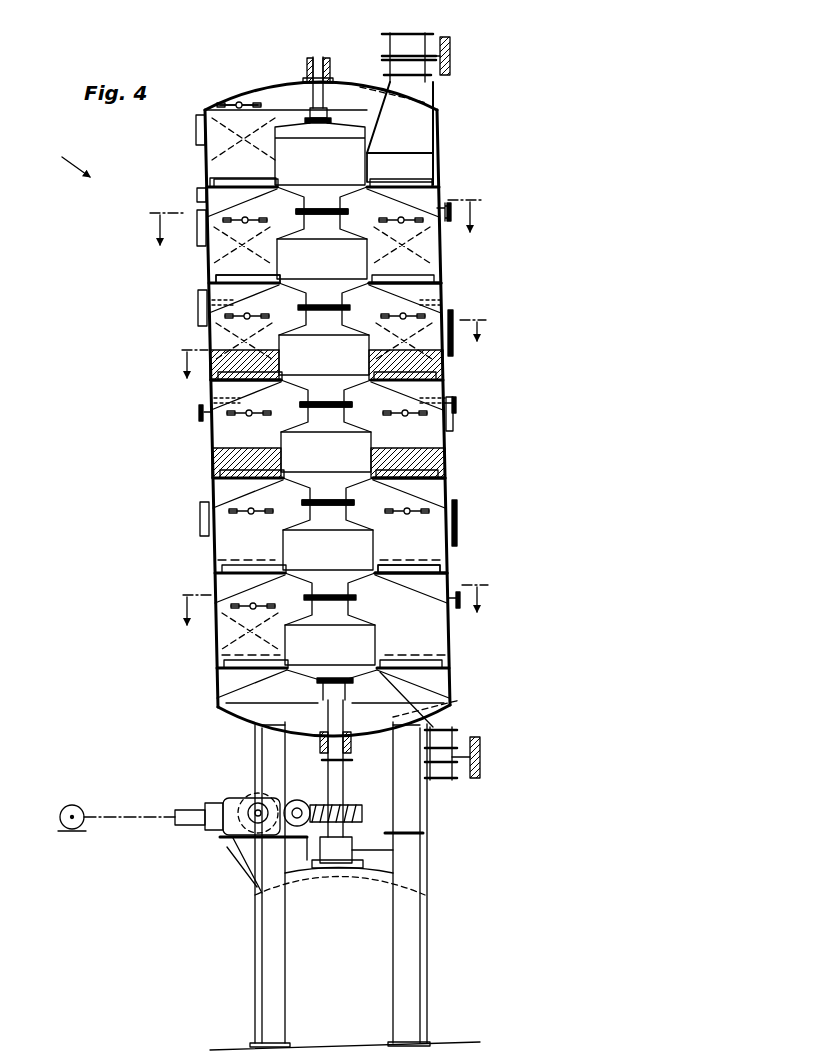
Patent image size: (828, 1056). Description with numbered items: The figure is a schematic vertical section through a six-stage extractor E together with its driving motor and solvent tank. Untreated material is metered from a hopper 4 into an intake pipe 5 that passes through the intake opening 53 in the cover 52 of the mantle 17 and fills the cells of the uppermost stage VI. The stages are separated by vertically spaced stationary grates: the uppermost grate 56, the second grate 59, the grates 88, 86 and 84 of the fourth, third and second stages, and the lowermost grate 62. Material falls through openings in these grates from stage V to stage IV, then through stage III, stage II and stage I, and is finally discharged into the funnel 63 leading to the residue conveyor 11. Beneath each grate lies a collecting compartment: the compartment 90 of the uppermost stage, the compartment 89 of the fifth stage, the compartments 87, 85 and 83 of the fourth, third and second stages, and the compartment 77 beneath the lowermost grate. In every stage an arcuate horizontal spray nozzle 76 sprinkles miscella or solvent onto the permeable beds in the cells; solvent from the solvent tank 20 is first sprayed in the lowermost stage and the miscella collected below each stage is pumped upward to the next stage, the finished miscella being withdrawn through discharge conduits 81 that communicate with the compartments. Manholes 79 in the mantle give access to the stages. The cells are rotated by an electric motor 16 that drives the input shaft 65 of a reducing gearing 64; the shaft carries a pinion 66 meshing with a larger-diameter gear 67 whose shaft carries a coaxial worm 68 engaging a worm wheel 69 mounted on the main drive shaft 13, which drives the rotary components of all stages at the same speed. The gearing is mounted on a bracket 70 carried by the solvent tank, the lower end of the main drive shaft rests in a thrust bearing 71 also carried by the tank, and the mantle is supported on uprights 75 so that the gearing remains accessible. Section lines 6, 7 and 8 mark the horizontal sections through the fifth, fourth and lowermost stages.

The hopper 4 is at (388, 50).
The intake pipe 5 is at (440, 92).
The section line 6- 6 is at (316, 211).
The section line 7- 7 is at (331, 338).
The section line 8- 8 is at (332, 603).
The residue conveyor 11 is at (455, 752).
The main drive shaft 13 is at (345, 838).
The electric motor 16 is at (78, 806).
The mantle 17 is at (434, 147).
The solvent tank 20 is at (332, 940).
The cover 52 is at (232, 103).
The intake opening 53 is at (430, 107).
The uppermost grate 56 is at (260, 200).
The second grate 59 is at (248, 290).
The lowermost grate 62 is at (262, 678).
The funnel 63 is at (440, 712).
The reducing gearing 64 is at (245, 785).
The input shaft 65 is at (192, 810).
The pinion 66 is at (245, 815).
The gear 67 is at (322, 745).
The worm 68 is at (300, 800).
The worm wheel 69 is at (350, 806).
The bracket 70 is at (235, 843).
The thrust bearing 71 is at (352, 852).
The uprights 75 is at (400, 870).
The spray nozzle 76 is at (246, 103).
The compartment 77 is at (218, 703).
The manholes 79 is at (455, 355).
The discharge conduits 81 is at (448, 222).
The compartment 83 is at (430, 582).
The grate 84 is at (418, 565).
The compartment 85 is at (378, 498).
The grate 86 is at (435, 480).
The compartment 87 is at (375, 398).
The grate 88 is at (215, 388).
The compartment 89 is at (430, 295).
The compartment 90 is at (370, 200).
The extractor E is at (67, 161).
The lowermost stage I is at (363, 622).
The second stage II is at (368, 523).
The third stage III is at (371, 426).
The fourth stage IV is at (370, 330).
The fifth stage V is at (365, 232).
The uppermost stage VI is at (403, 146).